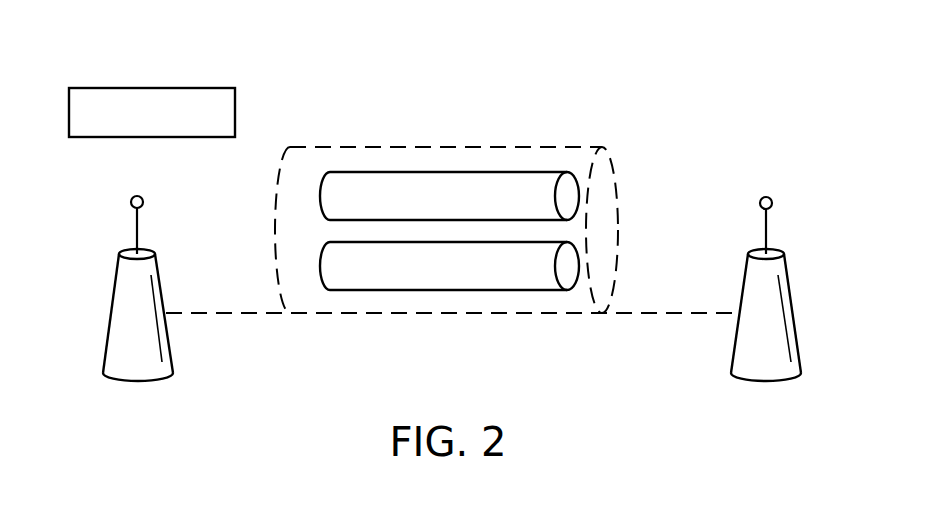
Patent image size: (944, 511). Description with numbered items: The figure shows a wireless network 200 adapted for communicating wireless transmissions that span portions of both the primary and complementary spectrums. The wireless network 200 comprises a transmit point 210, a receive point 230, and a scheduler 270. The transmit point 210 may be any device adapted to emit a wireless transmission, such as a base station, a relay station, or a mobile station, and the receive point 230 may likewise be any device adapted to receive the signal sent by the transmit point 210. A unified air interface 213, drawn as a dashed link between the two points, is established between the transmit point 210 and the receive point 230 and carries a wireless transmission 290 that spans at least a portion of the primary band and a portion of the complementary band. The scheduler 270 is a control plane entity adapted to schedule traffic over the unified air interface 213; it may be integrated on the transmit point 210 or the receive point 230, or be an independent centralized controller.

The wireless network 200 is at (602, 78).
The transmit point 210 is at (135, 387).
The unified air interface 213 is at (453, 315).
The receive point 230 is at (768, 387).
The scheduler 270 is at (150, 88).
The wireless transmission 290 is at (485, 148).